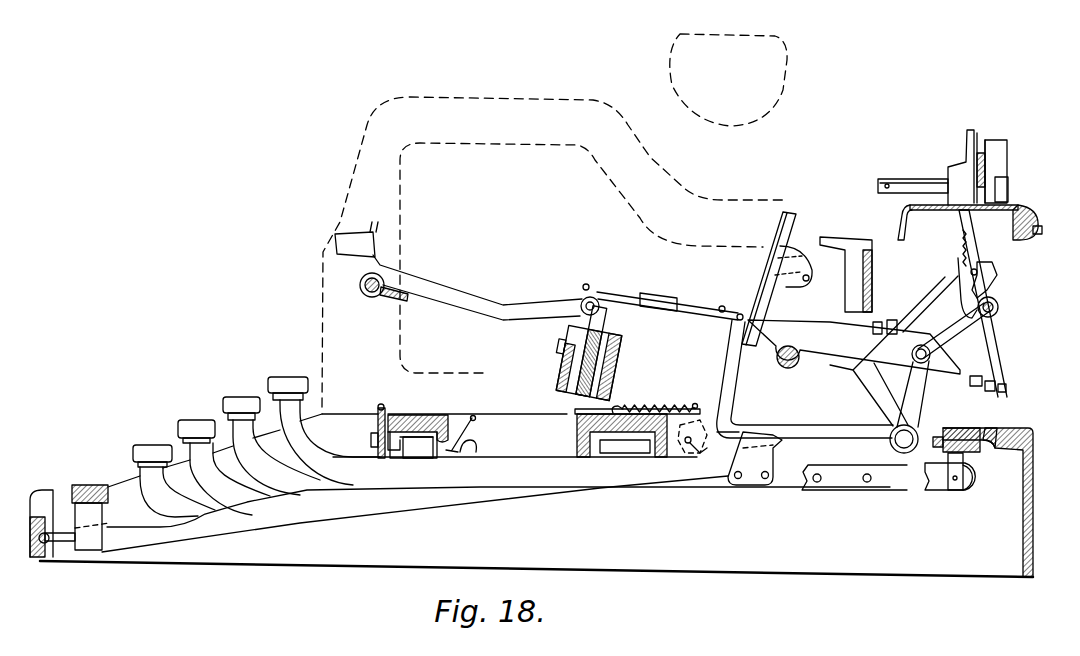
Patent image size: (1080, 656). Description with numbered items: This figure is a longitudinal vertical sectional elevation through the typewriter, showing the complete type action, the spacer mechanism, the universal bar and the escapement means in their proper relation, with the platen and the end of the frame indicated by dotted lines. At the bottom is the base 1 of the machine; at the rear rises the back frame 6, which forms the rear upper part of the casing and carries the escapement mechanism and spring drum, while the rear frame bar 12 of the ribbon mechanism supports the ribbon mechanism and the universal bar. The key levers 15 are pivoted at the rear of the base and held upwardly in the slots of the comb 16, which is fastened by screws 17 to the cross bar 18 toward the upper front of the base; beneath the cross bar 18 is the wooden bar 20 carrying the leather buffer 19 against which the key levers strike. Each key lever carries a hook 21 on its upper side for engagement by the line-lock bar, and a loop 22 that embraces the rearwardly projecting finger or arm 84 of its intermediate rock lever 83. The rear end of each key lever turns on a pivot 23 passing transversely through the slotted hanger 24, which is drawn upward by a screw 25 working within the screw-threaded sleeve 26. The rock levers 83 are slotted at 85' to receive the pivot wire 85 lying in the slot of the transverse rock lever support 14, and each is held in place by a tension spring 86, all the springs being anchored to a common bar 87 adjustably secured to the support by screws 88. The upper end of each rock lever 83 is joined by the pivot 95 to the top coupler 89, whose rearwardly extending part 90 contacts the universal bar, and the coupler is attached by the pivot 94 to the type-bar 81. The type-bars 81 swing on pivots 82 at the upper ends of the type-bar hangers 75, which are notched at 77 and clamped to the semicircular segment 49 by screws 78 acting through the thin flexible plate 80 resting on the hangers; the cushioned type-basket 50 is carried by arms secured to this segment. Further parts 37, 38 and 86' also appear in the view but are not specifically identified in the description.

The base 1 is at (373, 557).
The back frame 6 is at (1022, 206).
The rear frame bar 12 is at (866, 260).
The transverse rock lever support 14 is at (620, 433).
The key levers 15 is at (530, 480).
The comb 16 is at (380, 408).
The screws 17 is at (370, 438).
The cross bar 18 is at (413, 415).
The leather buffer 19 is at (417, 457).
The wooden bar 20 is at (408, 446).
The hooks 21 is at (480, 447).
The loop 22 is at (755, 458).
The pivot 23 is at (955, 495).
The slotted hanger 24 is at (968, 490).
The screw 25 is at (955, 430).
The screw threaded sleeve 26 is at (1007, 432).
The lever 37 is at (877, 440).
The lever 38 is at (1003, 265).
The semicircular segment 49 is at (600, 378).
The type-basket 50 is at (410, 267).
The type-bar hangers 75 is at (600, 338).
The notch 77 is at (570, 367).
The screws 78 is at (562, 348).
The plate 80 is at (577, 332).
The type-bars 81 is at (493, 302).
The pivot 82 is at (580, 292).
The intermediate rock lever 83 is at (796, 379).
The finger or arm 84 is at (733, 450).
The pivot wire 85 is at (689, 484).
The slot 85' is at (669, 475).
The tension spring 86 is at (660, 398).
The spring hook 86' is at (633, 399).
The common bar 87 is at (577, 425).
The screws 88 is at (577, 409).
The top coupler 89 is at (681, 305).
The rearwardly-extending part 90 is at (742, 313).
The pivot 94 is at (592, 285).
The pivot 95 is at (723, 307).